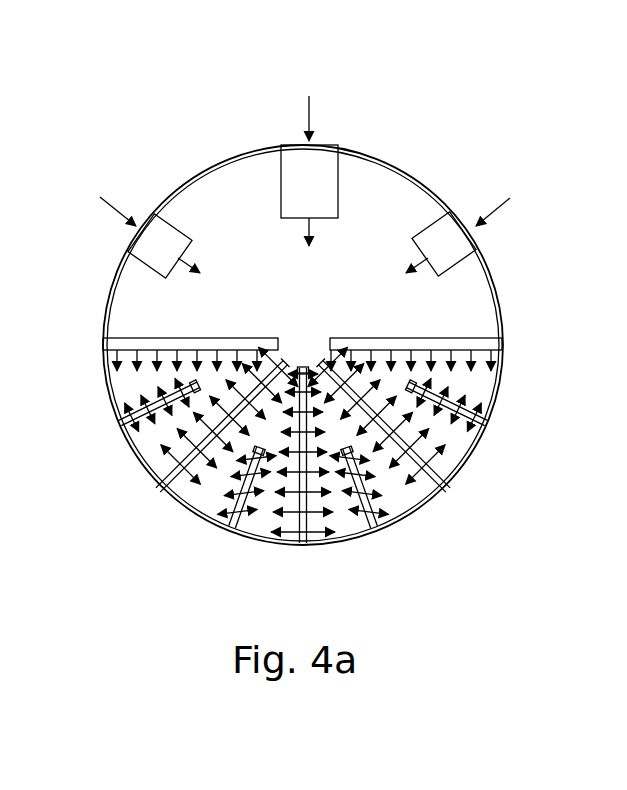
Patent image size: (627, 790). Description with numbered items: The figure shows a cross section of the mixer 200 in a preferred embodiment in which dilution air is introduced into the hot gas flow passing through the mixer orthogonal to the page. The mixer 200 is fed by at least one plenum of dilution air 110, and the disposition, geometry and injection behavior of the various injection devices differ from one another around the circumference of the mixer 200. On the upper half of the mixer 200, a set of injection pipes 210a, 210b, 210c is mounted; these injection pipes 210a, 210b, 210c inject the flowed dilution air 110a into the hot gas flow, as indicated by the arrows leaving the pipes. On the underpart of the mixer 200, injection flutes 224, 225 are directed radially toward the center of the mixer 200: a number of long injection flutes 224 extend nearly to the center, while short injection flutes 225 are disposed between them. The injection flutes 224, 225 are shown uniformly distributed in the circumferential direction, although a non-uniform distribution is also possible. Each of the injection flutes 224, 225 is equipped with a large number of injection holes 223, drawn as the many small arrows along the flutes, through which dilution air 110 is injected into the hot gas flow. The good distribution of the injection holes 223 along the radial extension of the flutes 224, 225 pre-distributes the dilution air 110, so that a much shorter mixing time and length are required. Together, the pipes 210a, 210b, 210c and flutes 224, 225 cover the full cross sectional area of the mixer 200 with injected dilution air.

The dilution air 110 is at (130, 536).
The flowed dilution air 110a is at (203, 272).
The mixer 200 is at (502, 388).
The injection pipe 210a is at (281, 182).
The injection pipe 210b is at (431, 224).
The injection pipe 210c is at (144, 266).
The injection holes 223 is at (233, 532).
The long injection flute 224 is at (304, 546).
The short injection flute 225 is at (383, 531).